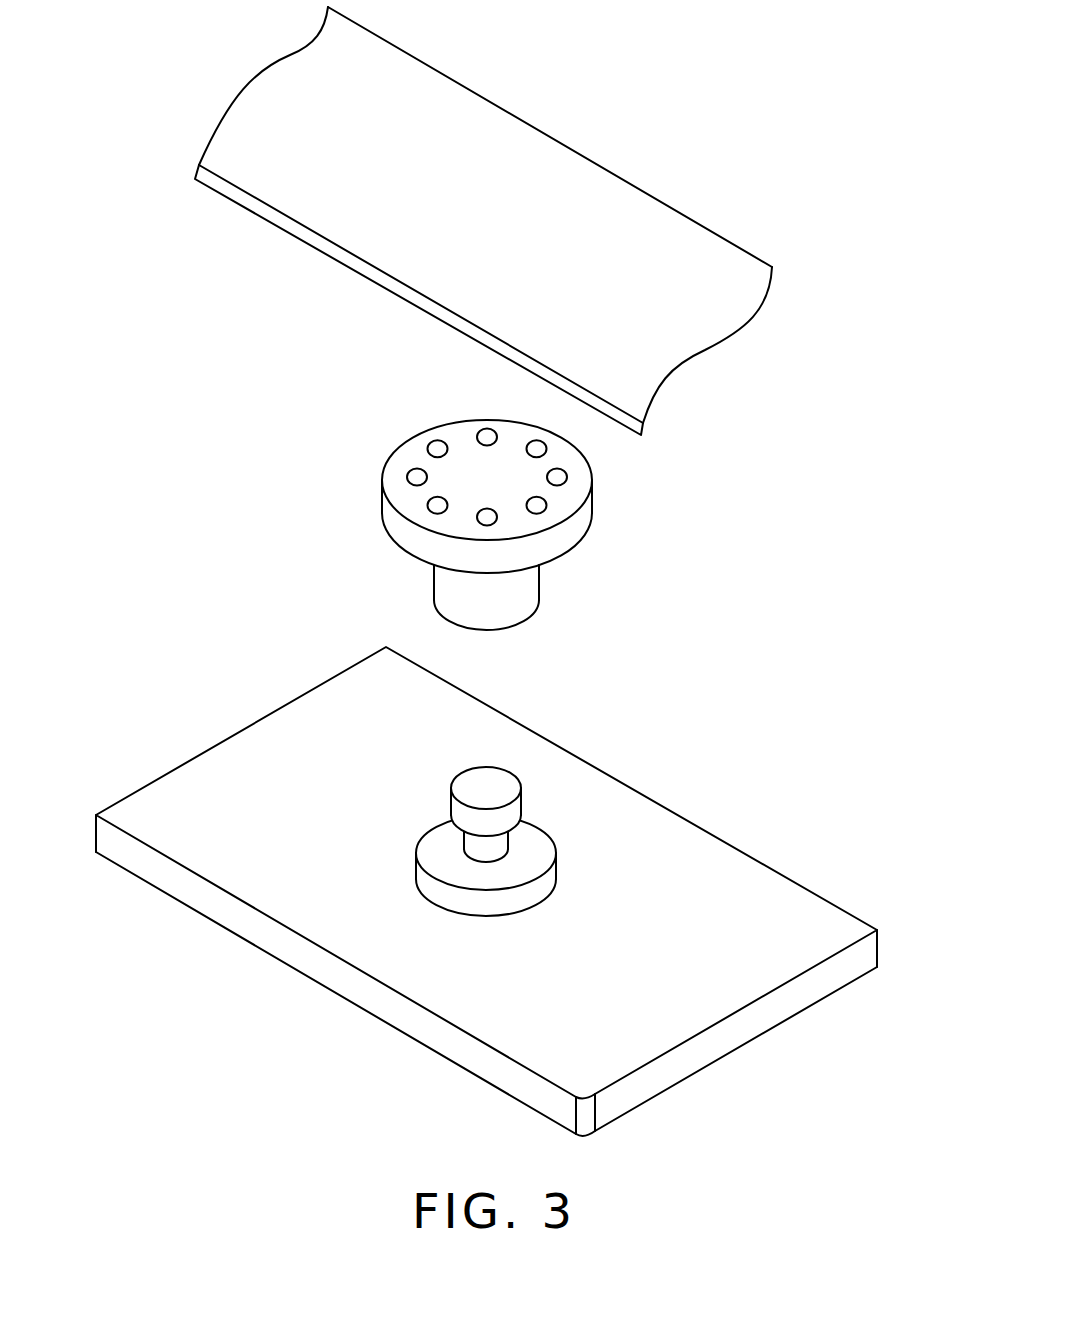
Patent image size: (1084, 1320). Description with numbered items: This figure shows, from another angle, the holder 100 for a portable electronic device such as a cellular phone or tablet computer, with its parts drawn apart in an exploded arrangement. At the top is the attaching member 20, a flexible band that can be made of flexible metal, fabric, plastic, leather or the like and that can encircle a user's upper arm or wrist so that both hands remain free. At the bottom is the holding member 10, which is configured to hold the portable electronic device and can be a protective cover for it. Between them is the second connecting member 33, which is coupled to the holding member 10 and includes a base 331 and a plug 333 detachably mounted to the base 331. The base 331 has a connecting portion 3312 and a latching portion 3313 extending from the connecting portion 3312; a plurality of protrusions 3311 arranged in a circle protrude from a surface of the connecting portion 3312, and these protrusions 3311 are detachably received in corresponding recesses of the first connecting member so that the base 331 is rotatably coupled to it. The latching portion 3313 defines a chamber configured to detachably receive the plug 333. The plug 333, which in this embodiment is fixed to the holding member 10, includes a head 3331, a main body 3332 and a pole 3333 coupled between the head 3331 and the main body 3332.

The holder 100 is at (697, 47).
The holding member 10 is at (692, 1058).
The attaching member 20 is at (647, 231).
The second connecting member 33 is at (857, 550).
The base 331 is at (781, 497).
The protrusions 3311 is at (436, 445).
The connecting portion 3312 is at (572, 527).
The latching portion 3313 is at (517, 593).
The plug 333 is at (779, 637).
The head 3331 is at (513, 812).
The main body 3332 is at (532, 890).
The pole 3333 is at (497, 845).